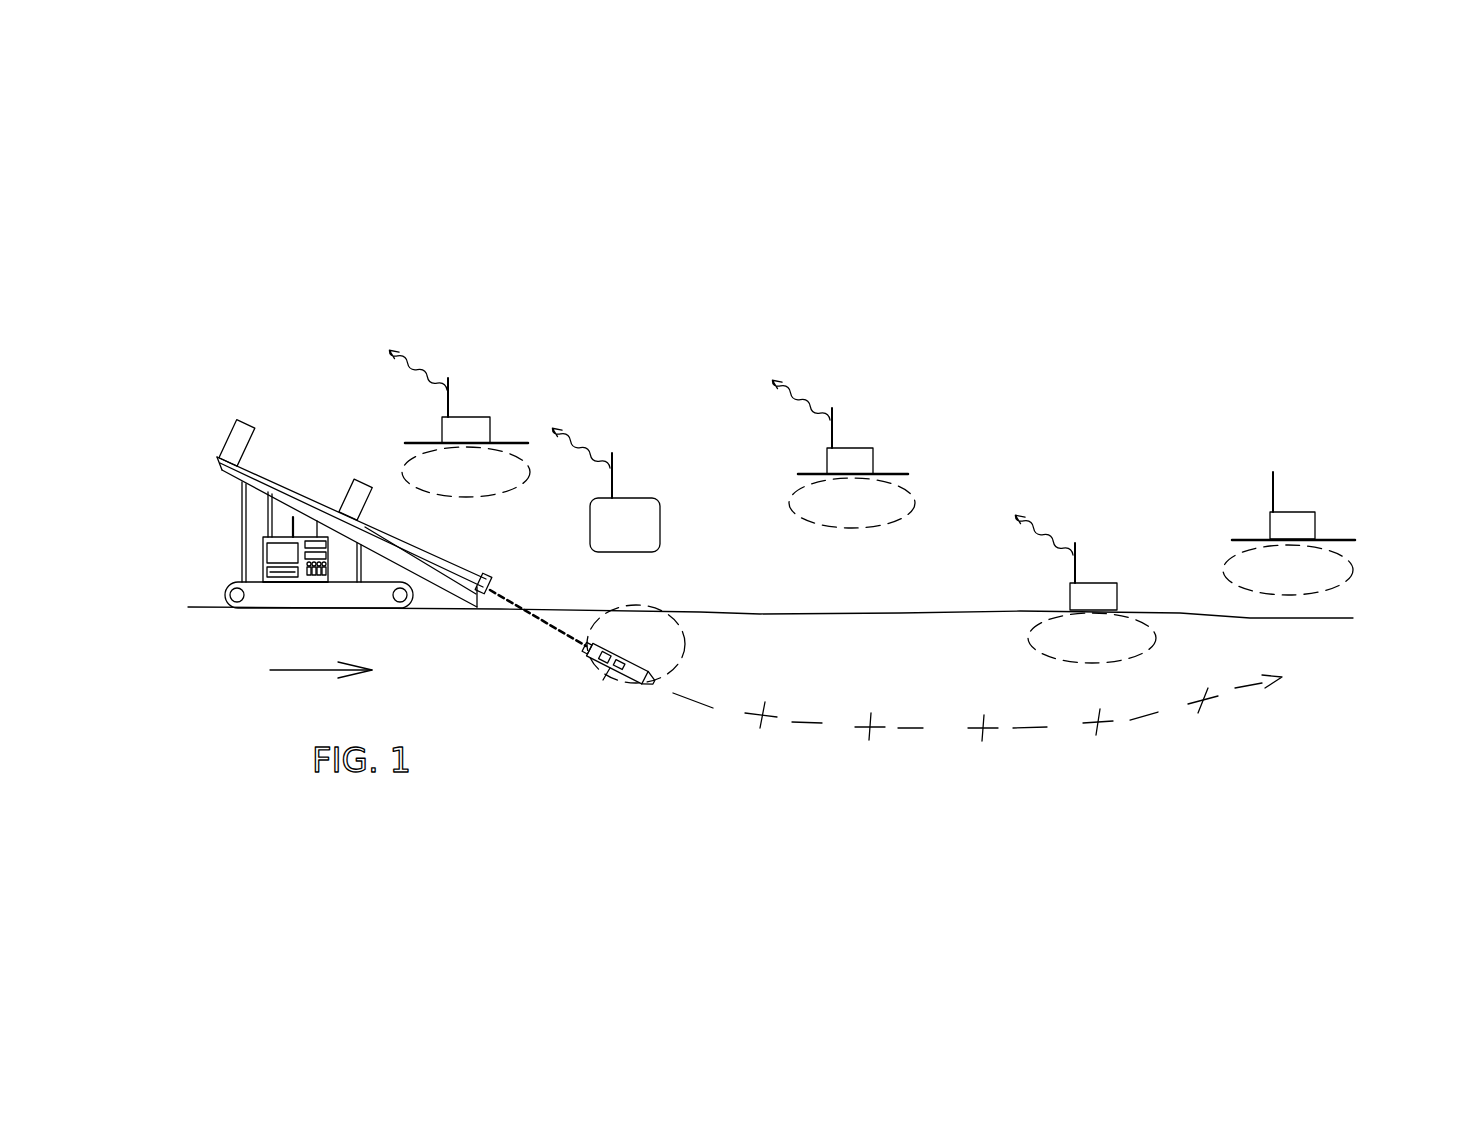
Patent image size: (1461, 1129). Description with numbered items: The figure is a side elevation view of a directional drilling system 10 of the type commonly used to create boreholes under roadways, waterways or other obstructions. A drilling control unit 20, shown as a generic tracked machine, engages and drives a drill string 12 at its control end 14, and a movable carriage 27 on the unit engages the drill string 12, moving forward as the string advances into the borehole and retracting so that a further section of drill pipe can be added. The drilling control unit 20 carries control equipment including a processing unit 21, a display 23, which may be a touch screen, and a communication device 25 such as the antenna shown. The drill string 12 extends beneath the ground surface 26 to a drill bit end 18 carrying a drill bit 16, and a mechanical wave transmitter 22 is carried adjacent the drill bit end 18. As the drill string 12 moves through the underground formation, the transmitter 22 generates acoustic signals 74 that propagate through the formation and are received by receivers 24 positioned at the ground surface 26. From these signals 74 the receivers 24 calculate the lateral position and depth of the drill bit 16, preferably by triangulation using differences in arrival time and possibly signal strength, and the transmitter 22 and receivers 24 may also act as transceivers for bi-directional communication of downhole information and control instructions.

The directional drilling system 10 is at (1094, 290).
The drill string 12 is at (507, 612).
The control end 14 is at (350, 495).
The drill bit 16 is at (637, 688).
The drill bit end 18 is at (588, 656).
The drilling control unit 20 is at (283, 582).
The processing unit 21 is at (285, 572).
The mechanical wave transmitter 22 is at (620, 659).
The display 23 is at (285, 553).
The receivers 24 is at (458, 427).
The communication device 25 is at (285, 528).
The ground surface 26 is at (913, 607).
The movable carriage 27 is at (256, 462).
The signals 74 is at (440, 492).